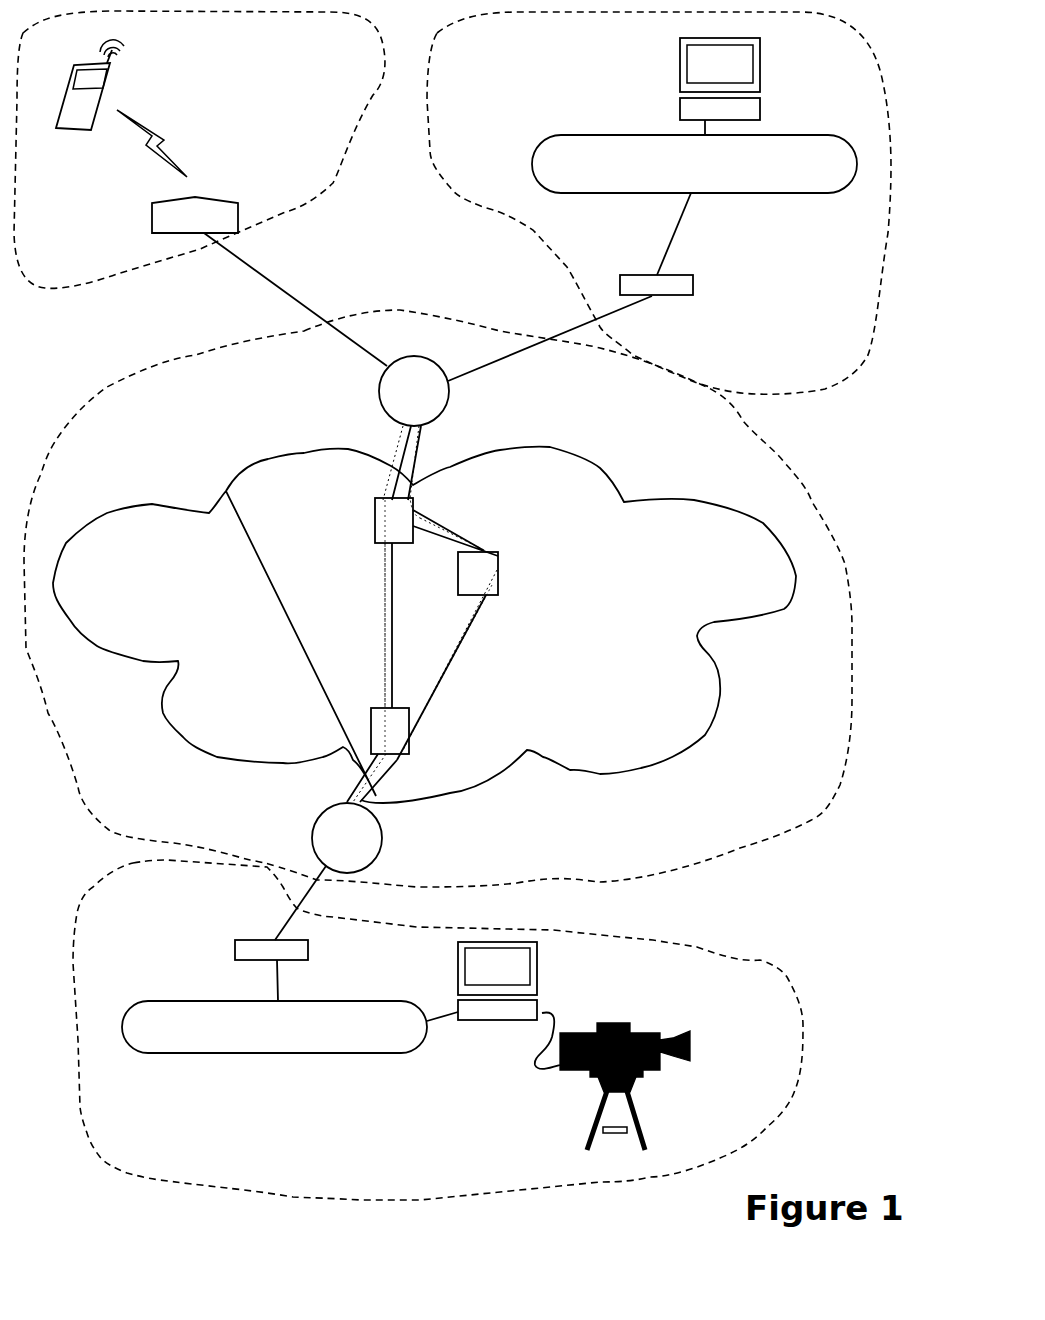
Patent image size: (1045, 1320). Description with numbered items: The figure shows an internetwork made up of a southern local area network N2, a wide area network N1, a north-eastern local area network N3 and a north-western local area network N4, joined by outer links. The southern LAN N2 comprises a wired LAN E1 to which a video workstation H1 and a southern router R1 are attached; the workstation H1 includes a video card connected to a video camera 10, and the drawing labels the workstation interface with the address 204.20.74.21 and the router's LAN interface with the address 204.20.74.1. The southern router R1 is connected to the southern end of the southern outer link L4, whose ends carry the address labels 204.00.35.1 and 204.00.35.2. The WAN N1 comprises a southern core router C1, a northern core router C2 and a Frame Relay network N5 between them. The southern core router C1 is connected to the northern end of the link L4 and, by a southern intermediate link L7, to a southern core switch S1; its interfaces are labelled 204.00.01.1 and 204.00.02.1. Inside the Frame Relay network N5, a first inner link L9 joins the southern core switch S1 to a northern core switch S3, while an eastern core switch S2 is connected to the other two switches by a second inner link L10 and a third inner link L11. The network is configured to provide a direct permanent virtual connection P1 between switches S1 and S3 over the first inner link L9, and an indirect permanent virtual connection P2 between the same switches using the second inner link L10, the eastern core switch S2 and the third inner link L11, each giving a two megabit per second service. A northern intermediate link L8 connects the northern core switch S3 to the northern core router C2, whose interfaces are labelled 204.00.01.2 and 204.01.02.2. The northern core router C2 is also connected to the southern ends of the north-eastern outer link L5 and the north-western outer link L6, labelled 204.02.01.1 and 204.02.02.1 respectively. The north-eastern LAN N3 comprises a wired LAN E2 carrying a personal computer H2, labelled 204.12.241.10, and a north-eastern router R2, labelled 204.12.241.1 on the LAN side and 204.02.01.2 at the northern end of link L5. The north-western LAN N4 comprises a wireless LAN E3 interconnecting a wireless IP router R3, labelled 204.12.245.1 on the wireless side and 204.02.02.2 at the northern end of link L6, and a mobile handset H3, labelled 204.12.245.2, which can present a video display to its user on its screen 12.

The screen 12 is at (75, 75).
The mobile handset H3 is at (106, 97).
The wireless LAN E3 is at (141, 146).
The wireless IP router R3 is at (213, 197).
The north-western LAN N4 is at (63, 290).
The north-western outer link L6 is at (273, 293).
The IP address of host H3 204.12.245.2 is at (104, 100).
The IP address of router R3 wireless interface 204.12.245.1 is at (198, 196).
The IP address of router R3 link L6 interface 204.02.02.2 is at (200, 237).
The north-eastern LAN N3 is at (443, 176).
The personal computer H2 is at (760, 77).
The LAN E2 is at (733, 193).
The north-eastern router R2 is at (637, 275).
The north-eastern outer link L5 is at (543, 325).
The IP address of host H2 204.12.241.10 is at (703, 122).
The IP address of router R2 Ethernet interface 204.12.241.1 is at (653, 276).
The IP address of router R2 link L5 interface 204.02.01.2 is at (653, 296).
The Wide Area Network N1 is at (800, 462).
The northern core router C2 is at (414, 391).
The IP address of router C2 link L6 interface 204.02.02.1 is at (385, 368).
The IP address of router C2 link L5 interface 204.02.01.1 is at (447, 379).
The IP address of router C2 link L8 interface 204.01.02.2 is at (428, 432).
The IP address of router C2 path interface 204.00.01.2 is at (398, 432).
The Frame Relay network N5 is at (226, 491).
The northern intermediate link L8 is at (410, 455).
The northern core switch S3 is at (375, 517).
The third inner link L11 is at (433, 527).
The eastern core switch S2 is at (498, 568).
The first inner link L9 is at (392, 577).
The direct Permanent Virtual Connection P1 is at (385, 610).
The second inner link L10 is at (463, 622).
The indirect Permanent Virtual Connection P2 is at (453, 650).
The southern core switch S1 is at (371, 725).
The southern intermediate link L7 is at (397, 763).
The southern core router C1 is at (347, 838).
The IP address of router C1 path interface 204.00.01.1 is at (341, 802).
The IP address of router C1 link L7 interface 204.00.02.1 is at (360, 802).
The IP address of router C1 link L4 interface 204.00.35.2 is at (322, 863).
The southern outer link L4 is at (310, 893).
The southern LAN N2 is at (697, 947).
The southern router R1 is at (235, 947).
The IP address of router R1 link L4 interface 204.00.35.1 is at (277, 942).
The IP address of router R1 Ethernet interface 204.20.74.1 is at (277, 963).
The LAN E1 is at (310, 1001).
The video workstation H1 is at (537, 977).
The IP address of host H1 204.20.74.21 is at (458, 1012).
The video camera 10 is at (653, 1027).